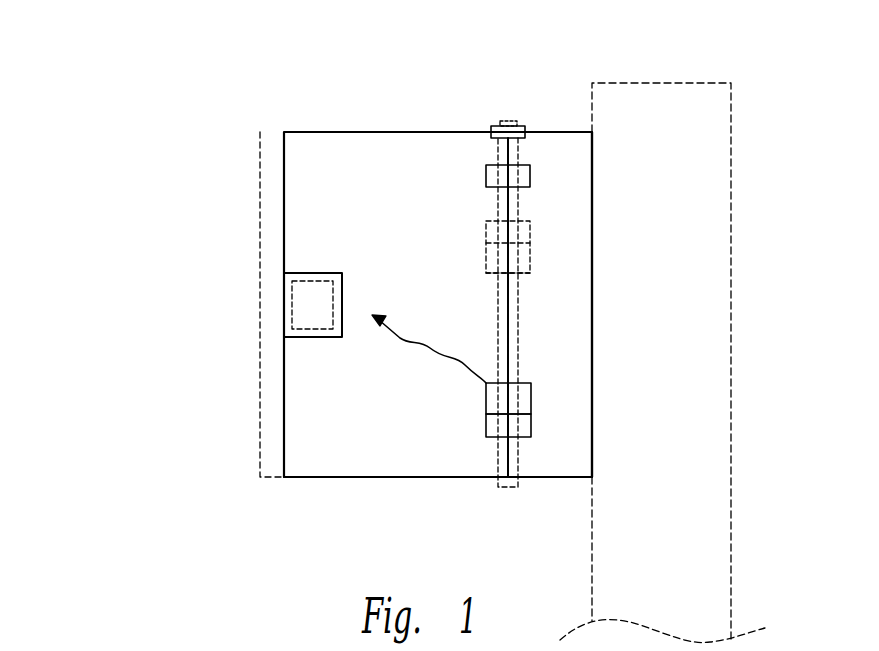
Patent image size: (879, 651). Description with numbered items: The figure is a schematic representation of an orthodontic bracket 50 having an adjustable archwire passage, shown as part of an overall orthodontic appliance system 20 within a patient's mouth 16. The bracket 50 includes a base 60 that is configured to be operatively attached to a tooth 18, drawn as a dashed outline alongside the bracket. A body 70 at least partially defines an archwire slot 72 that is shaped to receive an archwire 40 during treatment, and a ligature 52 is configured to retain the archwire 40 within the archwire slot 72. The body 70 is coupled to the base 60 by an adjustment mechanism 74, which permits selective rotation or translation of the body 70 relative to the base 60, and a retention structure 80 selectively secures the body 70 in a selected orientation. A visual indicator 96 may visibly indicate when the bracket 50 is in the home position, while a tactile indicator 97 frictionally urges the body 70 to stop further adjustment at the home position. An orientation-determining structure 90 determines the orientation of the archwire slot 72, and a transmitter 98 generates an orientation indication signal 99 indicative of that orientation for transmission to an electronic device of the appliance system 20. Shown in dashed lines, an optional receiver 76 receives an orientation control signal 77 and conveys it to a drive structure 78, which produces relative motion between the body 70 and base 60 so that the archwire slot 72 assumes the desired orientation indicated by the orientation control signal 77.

The patient's mouth 16 is at (136, 49).
The tooth 18 is at (731, 301).
The orthodontic appliance system 20 is at (149, 101).
The archwire 40 is at (305, 298).
The orthodontic bracket 50 is at (226, 141).
The ligature 52 is at (259, 475).
The base 60 is at (552, 479).
The body 70 is at (365, 479).
The archwire slot 72 is at (312, 336).
The adjustment mechanism 74 is at (518, 155).
The receiver 76 is at (525, 277).
The orientation control signal 77 is at (531, 262).
The drive structure 78 is at (486, 245).
The retention structure 80 is at (490, 165).
The orientation-determining structure 90 is at (486, 425).
The visual indicator 96 is at (512, 121).
The tactile indicator 97 is at (508, 358).
The transmitter 98 is at (486, 397).
The orientation indication signal 99 is at (405, 338).